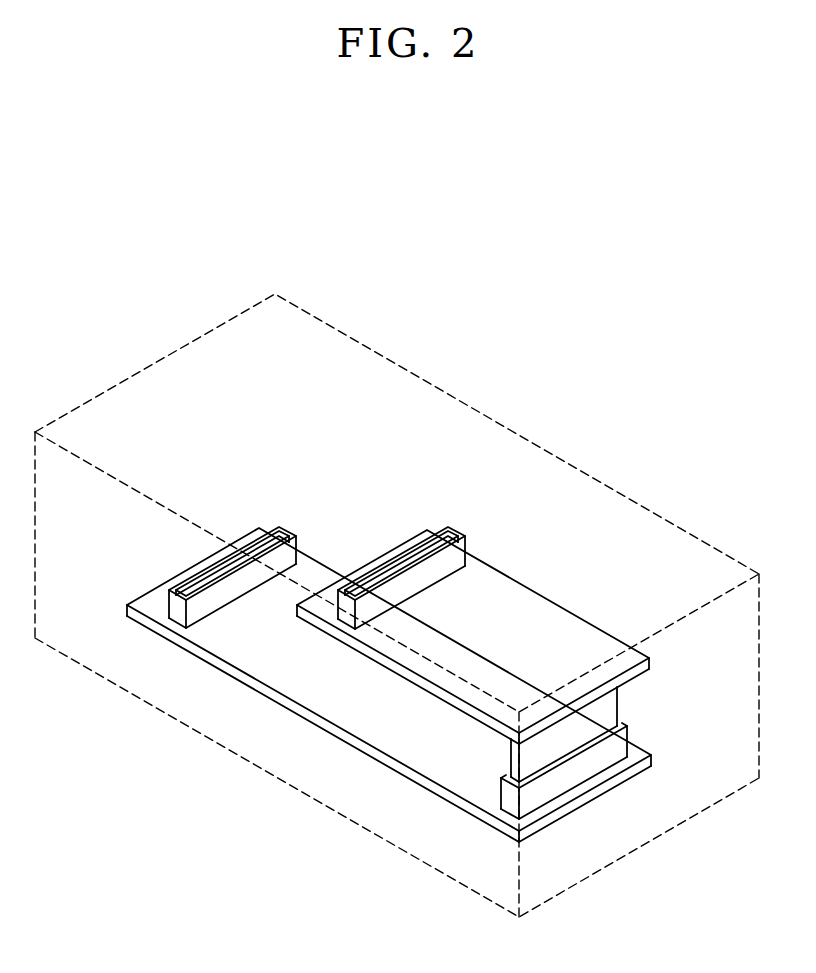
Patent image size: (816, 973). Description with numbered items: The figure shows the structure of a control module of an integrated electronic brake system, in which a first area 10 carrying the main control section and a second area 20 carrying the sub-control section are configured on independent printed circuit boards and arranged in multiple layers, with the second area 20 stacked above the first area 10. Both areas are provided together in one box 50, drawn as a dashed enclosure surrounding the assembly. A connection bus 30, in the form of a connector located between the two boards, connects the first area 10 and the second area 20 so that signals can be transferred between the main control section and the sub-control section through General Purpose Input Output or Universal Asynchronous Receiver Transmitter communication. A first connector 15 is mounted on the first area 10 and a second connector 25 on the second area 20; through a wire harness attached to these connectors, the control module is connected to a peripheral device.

The first area 10 is at (342, 707).
The second area 20 is at (512, 605).
The connection bus 30 is at (538, 753).
The first connector 15 is at (263, 547).
The second connector 25 is at (413, 557).
The box 50 is at (670, 522).